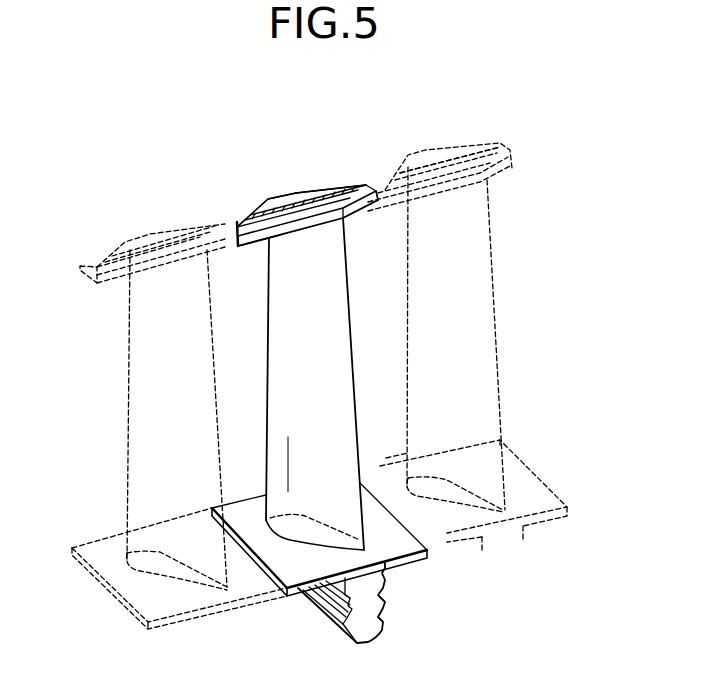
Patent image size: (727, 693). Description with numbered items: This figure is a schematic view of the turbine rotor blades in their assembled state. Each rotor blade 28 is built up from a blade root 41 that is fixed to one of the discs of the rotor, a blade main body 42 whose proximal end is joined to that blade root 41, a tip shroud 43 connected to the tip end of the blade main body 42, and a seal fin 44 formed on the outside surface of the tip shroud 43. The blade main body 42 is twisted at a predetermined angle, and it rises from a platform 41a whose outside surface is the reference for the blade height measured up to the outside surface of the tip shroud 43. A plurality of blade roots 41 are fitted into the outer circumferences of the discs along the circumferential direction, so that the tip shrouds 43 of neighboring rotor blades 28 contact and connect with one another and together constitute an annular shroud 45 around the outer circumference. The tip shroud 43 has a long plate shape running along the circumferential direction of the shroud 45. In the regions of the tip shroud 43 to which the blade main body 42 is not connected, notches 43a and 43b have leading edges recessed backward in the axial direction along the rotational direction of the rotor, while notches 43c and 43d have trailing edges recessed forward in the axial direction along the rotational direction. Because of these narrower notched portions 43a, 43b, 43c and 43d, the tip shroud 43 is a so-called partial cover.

The rotor blade 28 is at (296, 158).
The blade root 41 is at (378, 630).
The platform 41a is at (383, 540).
The blade main body 42 is at (335, 383).
The tip shroud 43 is at (262, 210).
The notch 43a is at (245, 195).
The notch 43b is at (322, 188).
The notch 43c is at (260, 240).
The notch 43d is at (360, 212).
The seal fin 44 is at (347, 188).
The annular shroud 45 is at (495, 136).